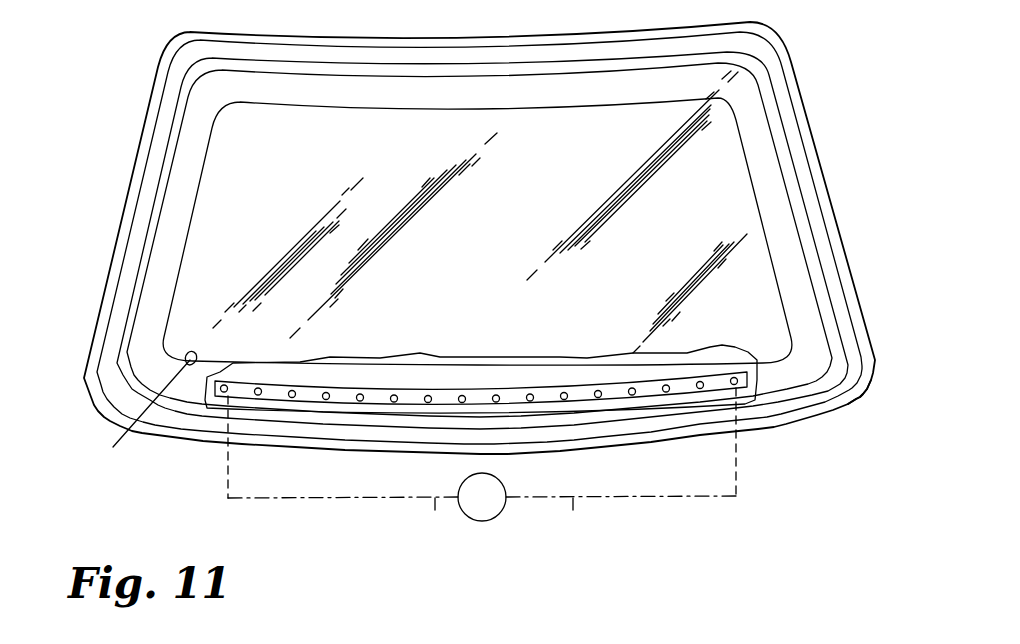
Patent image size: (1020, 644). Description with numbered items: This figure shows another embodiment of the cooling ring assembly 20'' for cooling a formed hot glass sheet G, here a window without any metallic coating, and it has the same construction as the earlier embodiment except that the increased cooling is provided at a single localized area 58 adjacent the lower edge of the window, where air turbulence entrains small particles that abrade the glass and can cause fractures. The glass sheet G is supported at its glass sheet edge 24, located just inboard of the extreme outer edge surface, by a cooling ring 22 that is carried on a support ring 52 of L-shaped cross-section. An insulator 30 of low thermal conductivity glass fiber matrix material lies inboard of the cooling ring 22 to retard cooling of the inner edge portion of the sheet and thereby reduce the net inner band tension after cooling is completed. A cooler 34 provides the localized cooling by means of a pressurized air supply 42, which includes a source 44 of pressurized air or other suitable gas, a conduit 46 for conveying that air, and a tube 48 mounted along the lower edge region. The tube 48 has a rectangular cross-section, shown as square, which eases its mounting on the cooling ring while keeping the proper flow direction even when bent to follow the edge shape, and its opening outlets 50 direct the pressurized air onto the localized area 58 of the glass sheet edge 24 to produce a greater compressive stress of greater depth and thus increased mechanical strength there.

The cooling ring assembly 20'' is at (459, 238).
The glass sheet G is at (797, 183).
The glass sheet edge 24 is at (810, 243).
The support ring 52 is at (863, 398).
The cooling ring 22 is at (790, 407).
The insulator 30 is at (144, 417).
The localized area 58 is at (273, 400).
The tube 48 is at (541, 394).
The opening outlets 50 is at (497, 396).
The cooler 34 is at (742, 492).
The pressurized air supply 42 is at (388, 508).
The source 44 is at (498, 514).
The conduit 46 is at (573, 510).